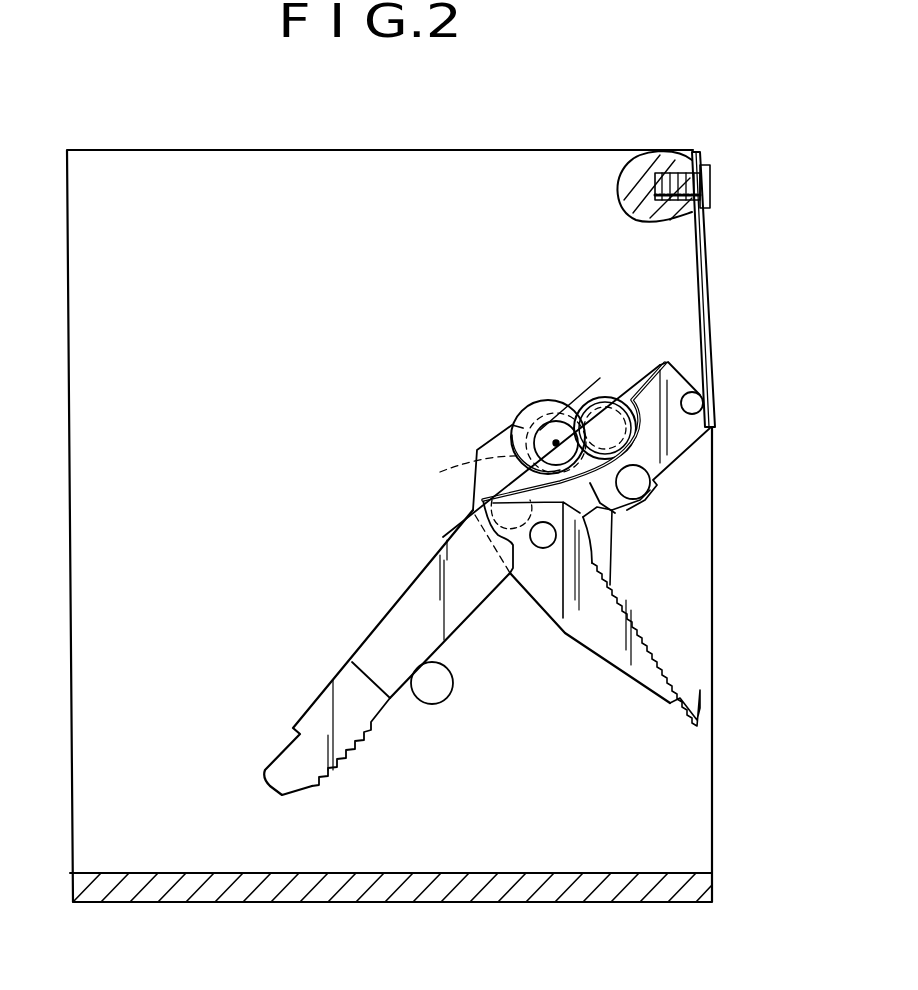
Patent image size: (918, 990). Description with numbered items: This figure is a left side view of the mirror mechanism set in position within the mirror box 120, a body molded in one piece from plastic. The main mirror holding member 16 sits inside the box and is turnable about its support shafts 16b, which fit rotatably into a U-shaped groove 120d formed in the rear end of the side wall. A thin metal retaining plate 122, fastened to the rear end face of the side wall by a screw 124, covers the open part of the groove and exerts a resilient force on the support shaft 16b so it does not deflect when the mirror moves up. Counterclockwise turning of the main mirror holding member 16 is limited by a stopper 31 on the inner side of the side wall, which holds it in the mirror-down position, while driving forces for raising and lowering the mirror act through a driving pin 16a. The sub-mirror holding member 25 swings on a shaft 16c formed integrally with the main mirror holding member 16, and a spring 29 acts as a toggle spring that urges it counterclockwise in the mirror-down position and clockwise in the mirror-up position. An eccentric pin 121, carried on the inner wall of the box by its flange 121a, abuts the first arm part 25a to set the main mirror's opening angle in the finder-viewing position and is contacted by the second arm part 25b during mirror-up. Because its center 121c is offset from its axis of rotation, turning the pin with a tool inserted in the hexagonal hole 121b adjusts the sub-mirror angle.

The mirror box 120 is at (412, 883).
The U-shaped groove 120d is at (664, 362).
The retaining plate 122 is at (707, 297).
The screw 124 is at (711, 180).
The main mirror holding member 16 is at (383, 633).
The driving pin 16a is at (650, 481).
The support shaft 16b is at (704, 403).
The shaft 16c is at (540, 548).
The sub-mirror holding member 25 is at (643, 672).
The first arm part 25a is at (607, 535).
The second arm part 25b is at (477, 452).
The spring 29 is at (613, 385).
The stopper 31 is at (438, 702).
The eccentric pin 121 is at (545, 440).
The flange 121a is at (517, 420).
The hexagonal hole 121b is at (538, 418).
The center of the eccentric pin 121c is at (473, 468).